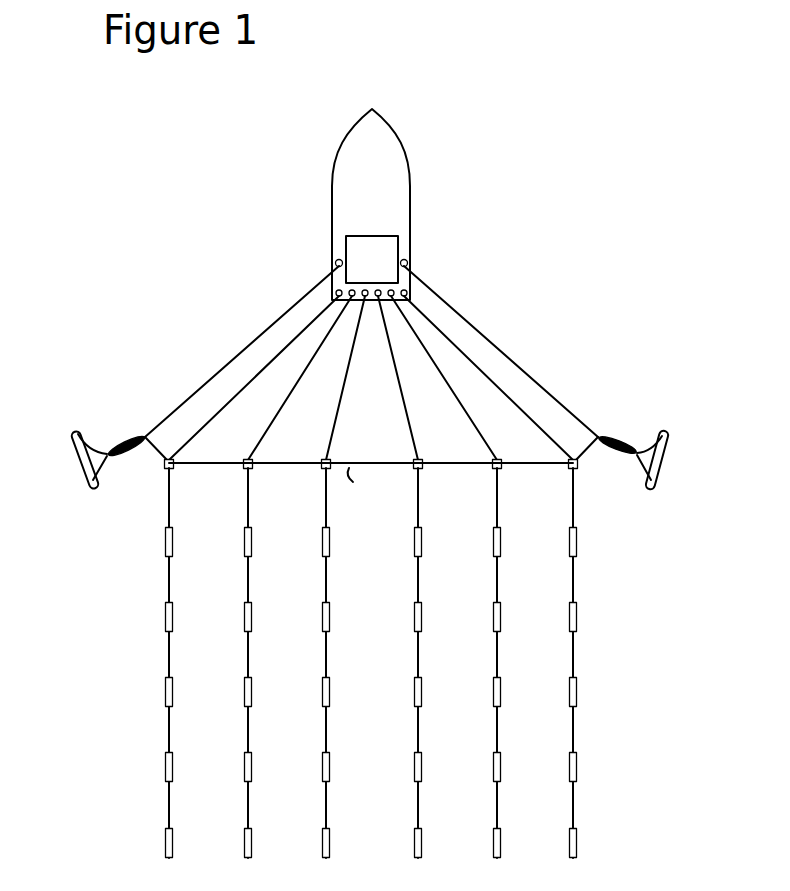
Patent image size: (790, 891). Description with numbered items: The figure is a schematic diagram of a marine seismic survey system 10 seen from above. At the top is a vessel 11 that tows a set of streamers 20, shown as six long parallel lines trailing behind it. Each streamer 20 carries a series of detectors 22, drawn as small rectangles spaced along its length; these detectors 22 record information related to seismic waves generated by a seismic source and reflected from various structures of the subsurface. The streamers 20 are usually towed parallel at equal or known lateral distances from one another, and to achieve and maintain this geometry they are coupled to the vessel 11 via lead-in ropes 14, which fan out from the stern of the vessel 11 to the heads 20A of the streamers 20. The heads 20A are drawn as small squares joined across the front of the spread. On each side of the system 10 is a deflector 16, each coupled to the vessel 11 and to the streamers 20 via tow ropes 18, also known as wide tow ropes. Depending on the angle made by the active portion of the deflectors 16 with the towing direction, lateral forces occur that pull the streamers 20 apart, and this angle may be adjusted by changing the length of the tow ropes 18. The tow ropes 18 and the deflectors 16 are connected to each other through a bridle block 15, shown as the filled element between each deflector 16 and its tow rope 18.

The marine seismic survey system 10 is at (571, 284).
The vessel 11 is at (410, 197).
The lead-in ropes 14 is at (290, 347).
The bridle block 15 is at (124, 443).
The deflectors 16 is at (72, 461).
The tow ropes 18 is at (222, 368).
The streamers 20 is at (598, 498).
The heads of the streamers 20A is at (170, 458).
The detectors 22 is at (165, 540).